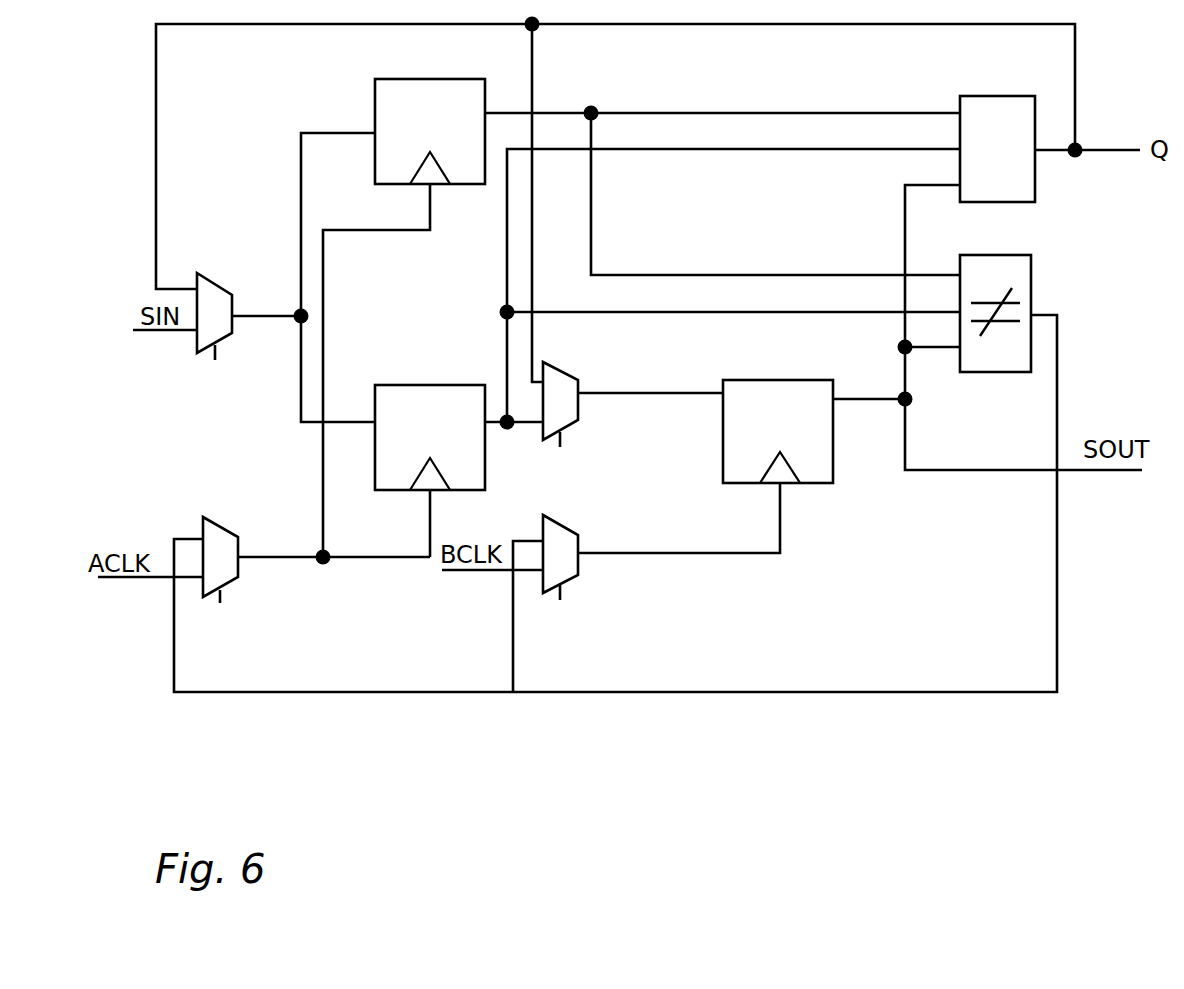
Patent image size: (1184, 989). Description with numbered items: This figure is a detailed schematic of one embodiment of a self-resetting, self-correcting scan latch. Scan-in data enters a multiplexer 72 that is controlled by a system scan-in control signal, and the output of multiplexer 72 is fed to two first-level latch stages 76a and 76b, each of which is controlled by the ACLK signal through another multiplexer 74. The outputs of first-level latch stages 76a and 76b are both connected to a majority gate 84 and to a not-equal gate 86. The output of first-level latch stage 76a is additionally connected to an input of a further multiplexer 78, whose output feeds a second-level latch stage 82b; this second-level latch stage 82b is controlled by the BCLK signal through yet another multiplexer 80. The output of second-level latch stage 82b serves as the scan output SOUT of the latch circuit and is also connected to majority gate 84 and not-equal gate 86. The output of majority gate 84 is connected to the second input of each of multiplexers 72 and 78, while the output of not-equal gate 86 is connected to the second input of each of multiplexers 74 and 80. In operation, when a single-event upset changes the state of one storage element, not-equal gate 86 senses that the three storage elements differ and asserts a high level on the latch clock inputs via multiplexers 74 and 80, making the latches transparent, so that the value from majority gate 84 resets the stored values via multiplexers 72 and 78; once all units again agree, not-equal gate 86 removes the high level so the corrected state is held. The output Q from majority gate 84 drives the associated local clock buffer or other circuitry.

The multiplexer 72 is at (232, 298).
The multiplexer 74 is at (238, 575).
The first-level (L1) latch stage 76a is at (375, 85).
The first-level (L1) latch stage 76b is at (470, 385).
The multiplexer 78 is at (579, 380).
The multiplexer 80 is at (578, 576).
The second-level (L2) latch stage 82b is at (817, 483).
The majority gate 84 is at (1035, 190).
The not-equal gate 86 is at (998, 372).